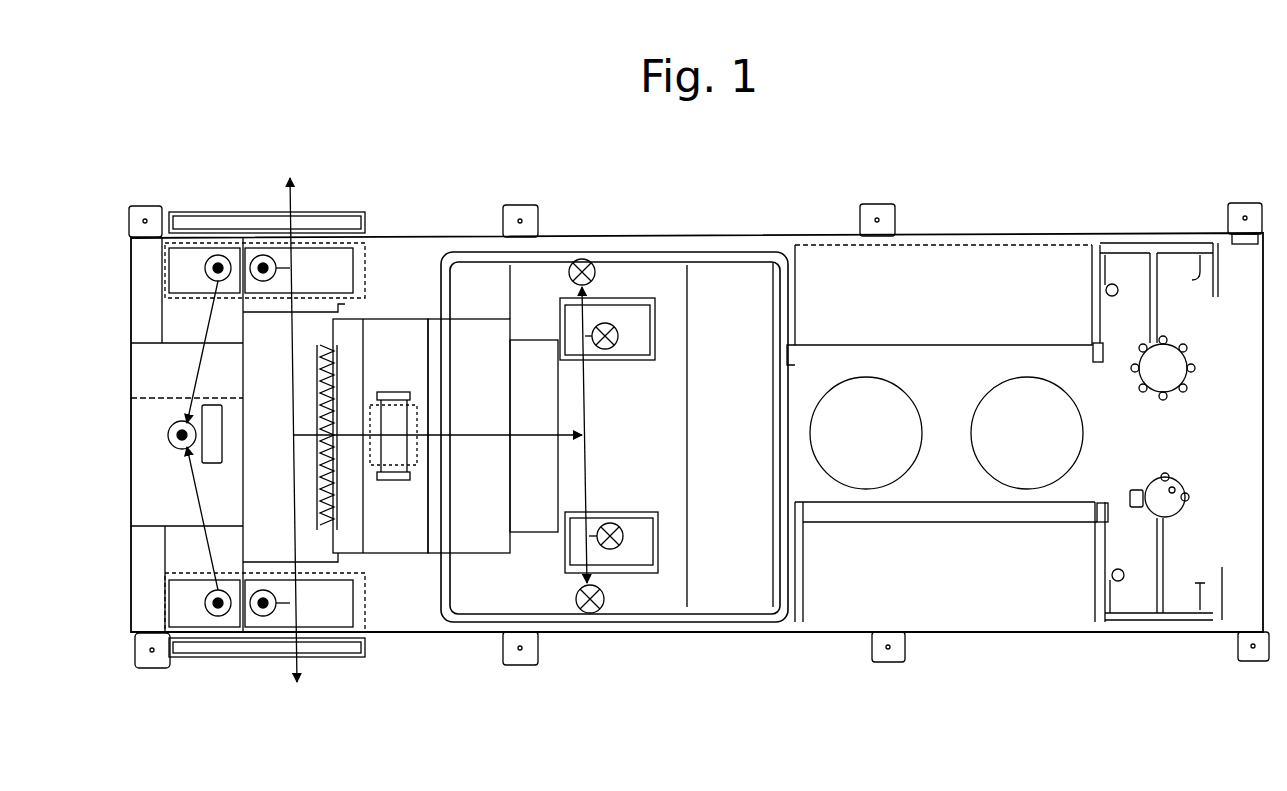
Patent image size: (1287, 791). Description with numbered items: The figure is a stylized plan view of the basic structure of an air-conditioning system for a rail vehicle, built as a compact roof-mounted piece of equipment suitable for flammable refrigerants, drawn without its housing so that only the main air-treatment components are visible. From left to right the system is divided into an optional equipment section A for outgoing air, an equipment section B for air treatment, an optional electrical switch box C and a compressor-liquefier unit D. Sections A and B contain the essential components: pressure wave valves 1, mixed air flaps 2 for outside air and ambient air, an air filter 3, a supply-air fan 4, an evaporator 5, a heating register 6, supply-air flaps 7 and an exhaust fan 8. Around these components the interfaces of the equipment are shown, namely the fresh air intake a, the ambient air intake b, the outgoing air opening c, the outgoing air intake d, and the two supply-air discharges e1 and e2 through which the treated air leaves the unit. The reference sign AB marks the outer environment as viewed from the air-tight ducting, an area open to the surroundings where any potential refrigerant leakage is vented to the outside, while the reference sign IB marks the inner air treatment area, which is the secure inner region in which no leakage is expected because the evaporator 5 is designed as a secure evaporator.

The pressure wave valve 1 is at (262, 676).
The mixed air flap 2 is at (294, 433).
The air filter 3 is at (372, 436).
The supply-air fan 4 is at (393, 436).
The evaporator 5 is at (469, 436).
The heating register 6 is at (534, 398).
The supply-air flap 7 is at (620, 435).
The exhaust fan 8 is at (182, 435).
The fresh air intake a is at (284, 438).
The ambient air intake b is at (299, 437).
The outgoing air opening c is at (168, 449).
The outgoing air intake d is at (265, 437).
The supply-air discharge e1 is at (610, 435).
The supply-air discharge e2 is at (595, 446).
The equipment section for outgoing air A is at (245, 717).
The equipment section for air treatment B is at (690, 717).
The electrical switch box C is at (775, 717).
The compressor-liquefier unit D is at (1262, 717).
The outer environment AB is at (322, 433).
The inner air treatment area IB is at (472, 440).